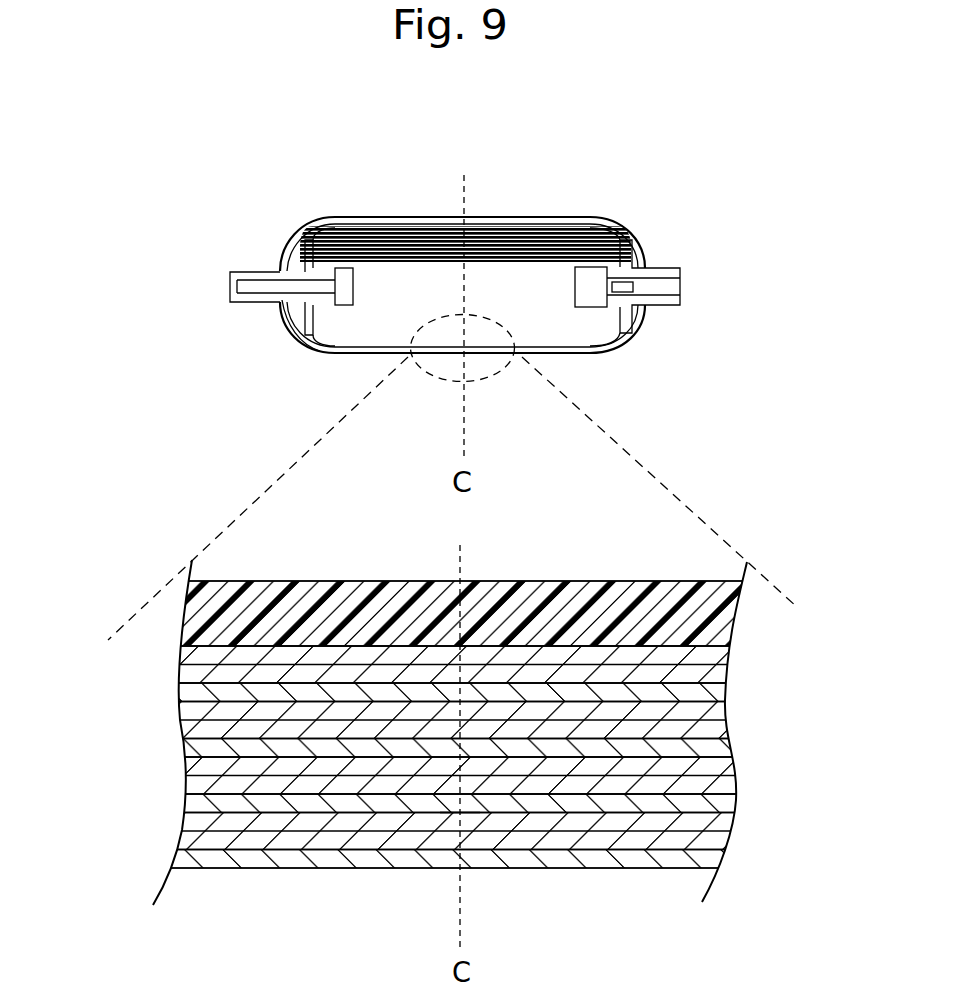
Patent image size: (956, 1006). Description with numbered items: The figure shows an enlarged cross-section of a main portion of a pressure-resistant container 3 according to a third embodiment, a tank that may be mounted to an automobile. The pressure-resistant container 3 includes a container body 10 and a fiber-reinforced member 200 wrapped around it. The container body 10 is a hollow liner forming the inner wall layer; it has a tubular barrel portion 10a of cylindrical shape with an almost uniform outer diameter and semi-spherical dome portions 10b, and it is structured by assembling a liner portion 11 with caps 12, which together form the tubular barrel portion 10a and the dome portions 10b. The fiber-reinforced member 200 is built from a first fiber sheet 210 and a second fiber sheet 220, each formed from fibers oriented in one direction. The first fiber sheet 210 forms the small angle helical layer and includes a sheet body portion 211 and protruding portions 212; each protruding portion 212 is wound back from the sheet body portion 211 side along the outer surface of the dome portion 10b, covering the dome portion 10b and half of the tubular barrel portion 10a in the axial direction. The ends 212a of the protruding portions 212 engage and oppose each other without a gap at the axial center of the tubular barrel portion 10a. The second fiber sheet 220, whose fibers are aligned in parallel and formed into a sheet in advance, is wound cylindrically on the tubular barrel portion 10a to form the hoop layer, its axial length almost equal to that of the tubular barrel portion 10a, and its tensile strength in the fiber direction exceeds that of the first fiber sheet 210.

The pressure-resistant container 3 is at (622, 208).
The container body 10 is at (373, 607).
The tubular barrel portion 10a is at (400, 219).
The dome portion 10b is at (632, 240).
The liner portion 11 is at (620, 348).
The cap 12 is at (628, 305).
The fiber-reinforced member 200 is at (313, 345).
The first fiber sheet 210 is at (740, 647).
The sheet body portion 211 is at (365, 838).
The protruding portion 212 is at (268, 822).
The end of protruding portion 212a is at (475, 818).
The second fiber sheet 220 is at (182, 690).